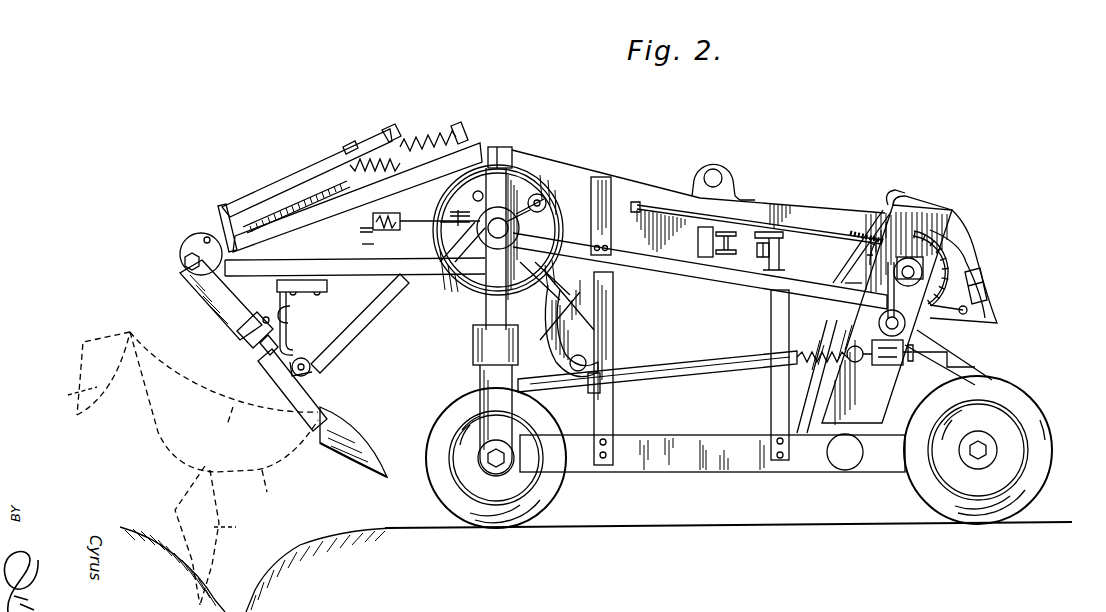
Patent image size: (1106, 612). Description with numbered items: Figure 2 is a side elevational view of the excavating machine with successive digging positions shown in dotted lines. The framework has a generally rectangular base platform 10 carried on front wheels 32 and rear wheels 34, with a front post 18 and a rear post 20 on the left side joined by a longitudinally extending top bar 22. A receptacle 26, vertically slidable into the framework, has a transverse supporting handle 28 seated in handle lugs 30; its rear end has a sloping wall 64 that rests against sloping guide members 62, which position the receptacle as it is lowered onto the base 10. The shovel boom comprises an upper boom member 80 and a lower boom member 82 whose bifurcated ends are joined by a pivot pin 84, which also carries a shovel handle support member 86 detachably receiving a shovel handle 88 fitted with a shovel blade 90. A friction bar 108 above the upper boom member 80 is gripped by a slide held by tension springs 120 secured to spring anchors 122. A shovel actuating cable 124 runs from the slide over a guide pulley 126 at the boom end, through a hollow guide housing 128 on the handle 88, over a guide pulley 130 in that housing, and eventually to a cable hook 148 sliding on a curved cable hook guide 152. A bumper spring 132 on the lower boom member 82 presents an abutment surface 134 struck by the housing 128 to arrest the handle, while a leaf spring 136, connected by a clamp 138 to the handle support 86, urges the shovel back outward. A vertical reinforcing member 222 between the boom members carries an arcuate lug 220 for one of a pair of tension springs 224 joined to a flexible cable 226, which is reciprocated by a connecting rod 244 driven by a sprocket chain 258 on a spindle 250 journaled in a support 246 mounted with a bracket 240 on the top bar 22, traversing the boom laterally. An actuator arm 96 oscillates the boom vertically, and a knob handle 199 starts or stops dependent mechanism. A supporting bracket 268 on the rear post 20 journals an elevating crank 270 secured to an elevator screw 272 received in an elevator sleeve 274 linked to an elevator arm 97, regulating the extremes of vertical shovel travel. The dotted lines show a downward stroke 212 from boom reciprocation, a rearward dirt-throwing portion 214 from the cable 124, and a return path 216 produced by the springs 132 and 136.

The base platform 10 is at (668, 462).
The front post 18 is at (372, 133).
The rear post 20 is at (933, 224).
The top bar 22 is at (654, 258).
The receptacle 26 is at (835, 210).
The supporting handle 28 is at (720, 180).
The receptacle handle lugs 30 is at (740, 190).
The front wheels 32 is at (430, 482).
The rear wheels 34 is at (1050, 434).
The guide members 62 is at (887, 300).
The sloping wall 64 is at (840, 286).
The upper boom member 80 is at (250, 236).
The lower boom member 82 is at (442, 270).
The pivot pin 84 is at (186, 276).
The shovel handle support member 86 is at (222, 302).
The shovel handle 88 is at (318, 408).
The shovel blade 90 is at (350, 440).
The actuator arm 96 is at (565, 303).
The elevator arm 97 is at (475, 334).
The friction bar 108 is at (262, 198).
The tension springs 120 is at (422, 140).
The spring anchors 122 is at (468, 148).
The shovel actuating cable 124 is at (318, 186).
The guide pulley 126 is at (212, 232).
The guide housing 128 is at (275, 357).
The guide pulley 130 is at (312, 369).
The bumper spring 132 is at (290, 309).
The abutment surface 134 is at (288, 343).
The leaf spring 136 is at (294, 196).
The clamp 138 is at (250, 332).
The cable hook 148 is at (986, 284).
The cable hook guide 152 is at (978, 258).
The knob handle 199 is at (990, 315).
The downward stroke portion 212 is at (197, 468).
The dirt-throwing portion 214 is at (277, 487).
The return path 216 is at (224, 391).
The lug 220 is at (372, 242).
The vertical reinforcing member 222 is at (386, 247).
The tension springs 224 is at (432, 217).
The flexible cable 226 is at (571, 197).
The bracket 240 is at (698, 242).
The connecting rod 244 is at (762, 215).
The support 246 is at (764, 262).
The spindle 250 is at (746, 258).
The sprocket chain 258 is at (856, 250).
The supporting bracket 268 is at (889, 357).
The elevating crank 270 is at (956, 355).
The elevator screw 272 is at (832, 348).
The elevator sleeve 274 is at (707, 365).